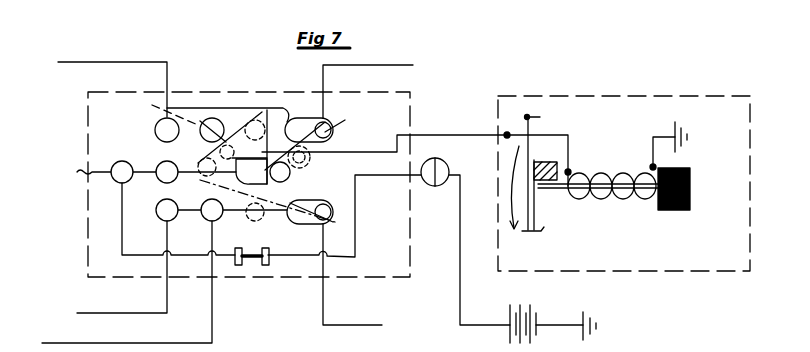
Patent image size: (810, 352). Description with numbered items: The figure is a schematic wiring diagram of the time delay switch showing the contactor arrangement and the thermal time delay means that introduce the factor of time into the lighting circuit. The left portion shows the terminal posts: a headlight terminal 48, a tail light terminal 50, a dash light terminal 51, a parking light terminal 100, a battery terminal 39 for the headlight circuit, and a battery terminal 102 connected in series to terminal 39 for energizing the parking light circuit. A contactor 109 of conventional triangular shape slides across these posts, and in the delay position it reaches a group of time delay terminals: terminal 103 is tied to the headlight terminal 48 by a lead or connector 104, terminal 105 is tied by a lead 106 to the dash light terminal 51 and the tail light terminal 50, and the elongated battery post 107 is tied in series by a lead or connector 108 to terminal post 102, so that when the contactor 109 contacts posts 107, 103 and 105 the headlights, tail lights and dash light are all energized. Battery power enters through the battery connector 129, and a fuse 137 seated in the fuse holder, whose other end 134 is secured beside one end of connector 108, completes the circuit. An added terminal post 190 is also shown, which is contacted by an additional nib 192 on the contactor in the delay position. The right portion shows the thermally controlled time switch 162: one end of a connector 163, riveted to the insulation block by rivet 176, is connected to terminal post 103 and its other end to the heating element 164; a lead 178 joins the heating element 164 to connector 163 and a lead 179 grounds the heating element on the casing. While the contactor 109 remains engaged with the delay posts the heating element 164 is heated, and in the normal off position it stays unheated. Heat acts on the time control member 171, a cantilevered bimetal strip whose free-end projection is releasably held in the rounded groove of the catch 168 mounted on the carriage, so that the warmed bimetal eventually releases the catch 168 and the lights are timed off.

The battery terminal 39 is at (77, 172).
The headlight terminal 48 is at (155, 130).
The tail light terminal 50 is at (167, 221).
The dash light terminal 51 is at (214, 221).
The parking light terminal 100 is at (228, 108).
The battery terminal 102 is at (142, 150).
The elongated terminal 103 is at (307, 118).
The lead or connector 104 is at (176, 107).
The terminal 105 is at (300, 200).
The lead 106 is at (283, 222).
The elongated battery post 107 is at (254, 200).
The lead or connector 108 is at (178, 150).
The contactor 109 is at (335, 152).
The battery connector 129 is at (357, 247).
The other end of fuse holder 134 is at (123, 245).
The fuse 137 is at (252, 266).
The thermally controlled time switch 162 is at (748, 76).
The connector 163 is at (436, 134).
The heating element 164 is at (606, 173).
The catch 168 is at (545, 160).
The time control member 171 is at (558, 190).
The rivet 176 is at (507, 134).
The lead 178 is at (540, 127).
The lead 179 is at (659, 135).
The added terminal post 190 is at (283, 118).
The contactor nib 192 is at (242, 112).